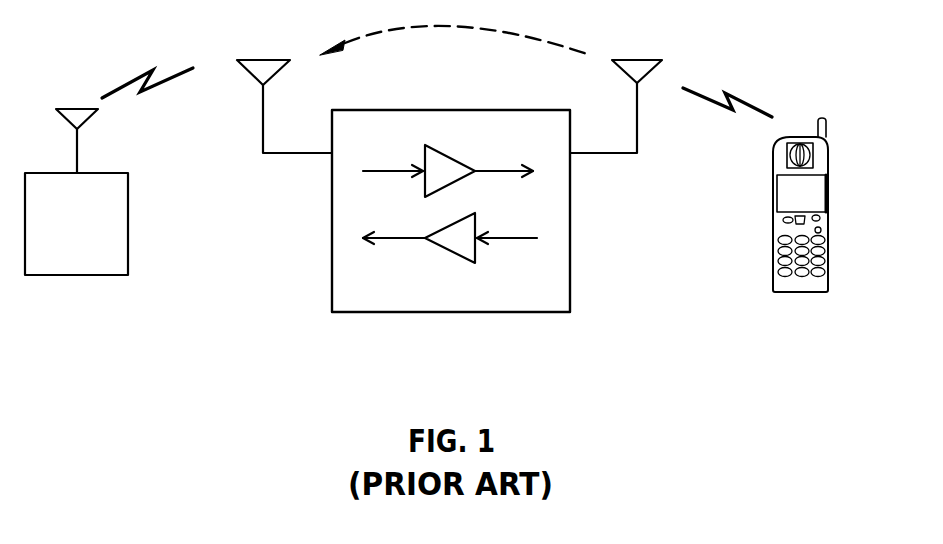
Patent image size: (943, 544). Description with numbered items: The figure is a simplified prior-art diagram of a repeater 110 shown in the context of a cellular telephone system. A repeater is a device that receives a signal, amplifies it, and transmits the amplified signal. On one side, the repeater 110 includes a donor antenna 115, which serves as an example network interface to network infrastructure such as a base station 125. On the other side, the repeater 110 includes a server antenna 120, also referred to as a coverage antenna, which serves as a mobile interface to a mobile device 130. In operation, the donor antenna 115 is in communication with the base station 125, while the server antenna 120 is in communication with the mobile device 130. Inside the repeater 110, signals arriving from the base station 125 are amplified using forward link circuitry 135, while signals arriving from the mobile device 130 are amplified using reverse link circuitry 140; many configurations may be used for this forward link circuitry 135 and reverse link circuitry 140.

The repeater 110 is at (500, 313).
The donor antenna 115 is at (277, 70).
The server antenna 120 is at (623, 71).
The base station 125 is at (93, 276).
The mobile device 130 is at (802, 292).
The forward link circuitry 135 is at (450, 155).
The reverse link circuitry 140 is at (455, 255).